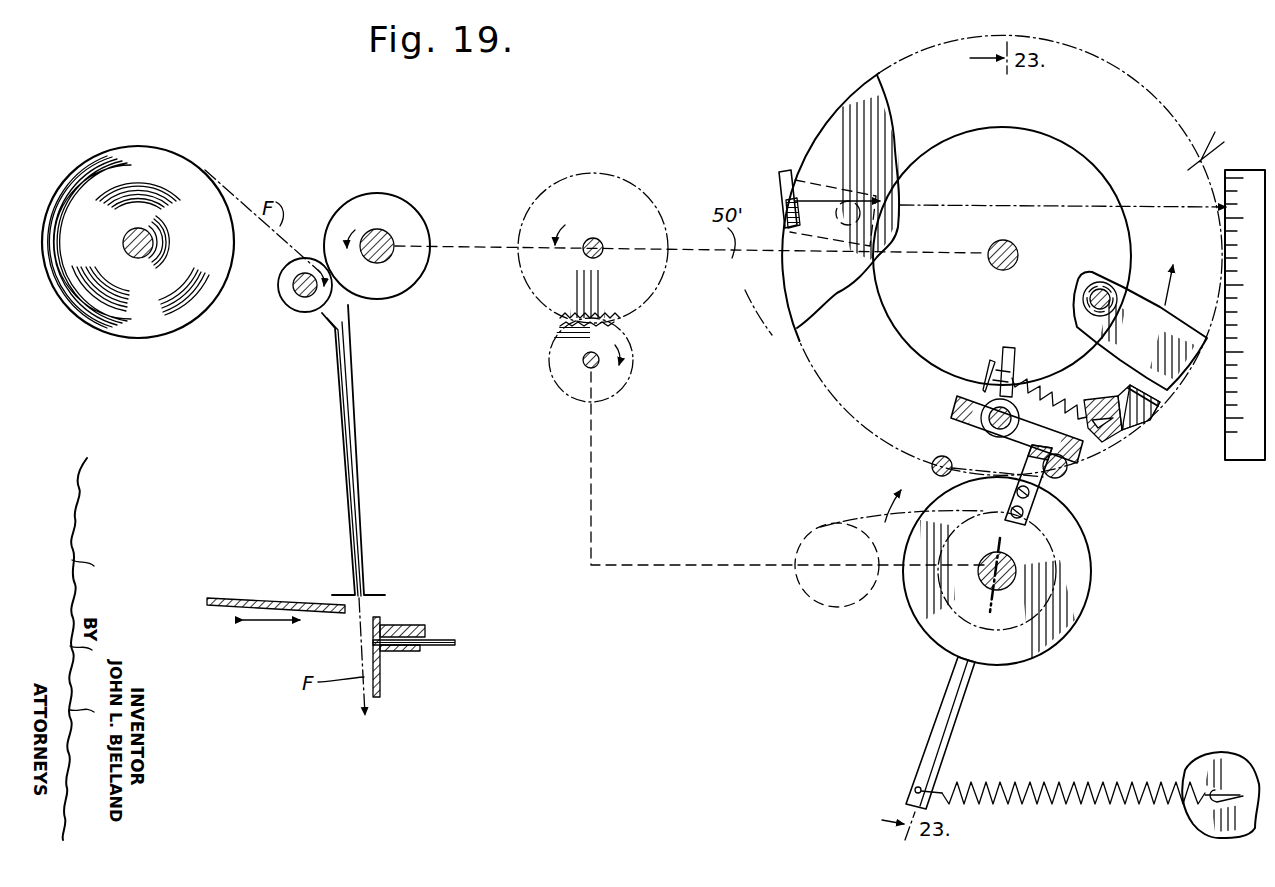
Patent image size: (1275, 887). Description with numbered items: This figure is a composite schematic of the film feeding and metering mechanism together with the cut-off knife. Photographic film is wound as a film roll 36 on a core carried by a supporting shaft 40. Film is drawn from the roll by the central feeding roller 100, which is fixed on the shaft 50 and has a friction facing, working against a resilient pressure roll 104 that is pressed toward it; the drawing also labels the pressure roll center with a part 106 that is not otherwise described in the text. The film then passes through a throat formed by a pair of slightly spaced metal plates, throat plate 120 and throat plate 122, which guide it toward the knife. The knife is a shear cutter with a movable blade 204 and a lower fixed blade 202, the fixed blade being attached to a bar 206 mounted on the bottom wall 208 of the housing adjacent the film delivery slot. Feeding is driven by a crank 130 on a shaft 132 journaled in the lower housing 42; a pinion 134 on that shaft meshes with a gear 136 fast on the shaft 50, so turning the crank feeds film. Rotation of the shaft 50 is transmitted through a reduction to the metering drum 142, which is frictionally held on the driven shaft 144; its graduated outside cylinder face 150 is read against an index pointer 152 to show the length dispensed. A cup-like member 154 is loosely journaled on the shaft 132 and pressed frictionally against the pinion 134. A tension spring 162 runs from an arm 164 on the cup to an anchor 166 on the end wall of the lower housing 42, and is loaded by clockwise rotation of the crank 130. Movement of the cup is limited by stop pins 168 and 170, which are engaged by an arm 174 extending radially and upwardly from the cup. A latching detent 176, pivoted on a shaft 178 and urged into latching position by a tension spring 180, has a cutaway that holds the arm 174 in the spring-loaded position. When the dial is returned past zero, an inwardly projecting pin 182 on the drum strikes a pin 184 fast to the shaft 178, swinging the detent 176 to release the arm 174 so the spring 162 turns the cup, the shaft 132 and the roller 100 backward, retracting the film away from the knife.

The film roll 36 is at (190, 182).
The supporting shaft 40 is at (136, 256).
The central feeding roller 100 is at (408, 218).
The pressure roll 104 is at (302, 312).
The pinch roller shaft 106 is at (293, 284).
The throat plate 120 is at (361, 448).
The throat plate 122 is at (344, 430).
The movable blade 204 is at (272, 587).
The lower fixed blade 202 is at (380, 623).
The bar 206 is at (426, 630).
The bottom wall 208 is at (426, 645).
The shaft 50 is at (598, 240).
The gear 136 is at (536, 294).
The pinion 134 is at (558, 347).
The metering drum 142 is at (1210, 134).
The driven shaft 144 is at (1010, 246).
The outside cylinder face 150 is at (1244, 176).
The index pointer 152 is at (780, 192).
The cup-like member 154 is at (1078, 584).
The shaft 132 is at (1008, 569).
The crank 130 is at (884, 616).
The arm 164 is at (957, 724).
The tension spring 162 is at (1002, 784).
The lower housing 42 is at (1196, 770).
The anchor 166 is at (1220, 792).
The stop pin 168 is at (931, 468).
The stop pin 170 is at (1061, 463).
The arm 174 is at (1042, 482).
The latching detent 176 is at (1054, 438).
The shaft 178 is at (992, 419).
The tension spring 180 is at (1060, 388).
The pin 182 is at (1096, 292).
The pin 184 is at (1017, 358).